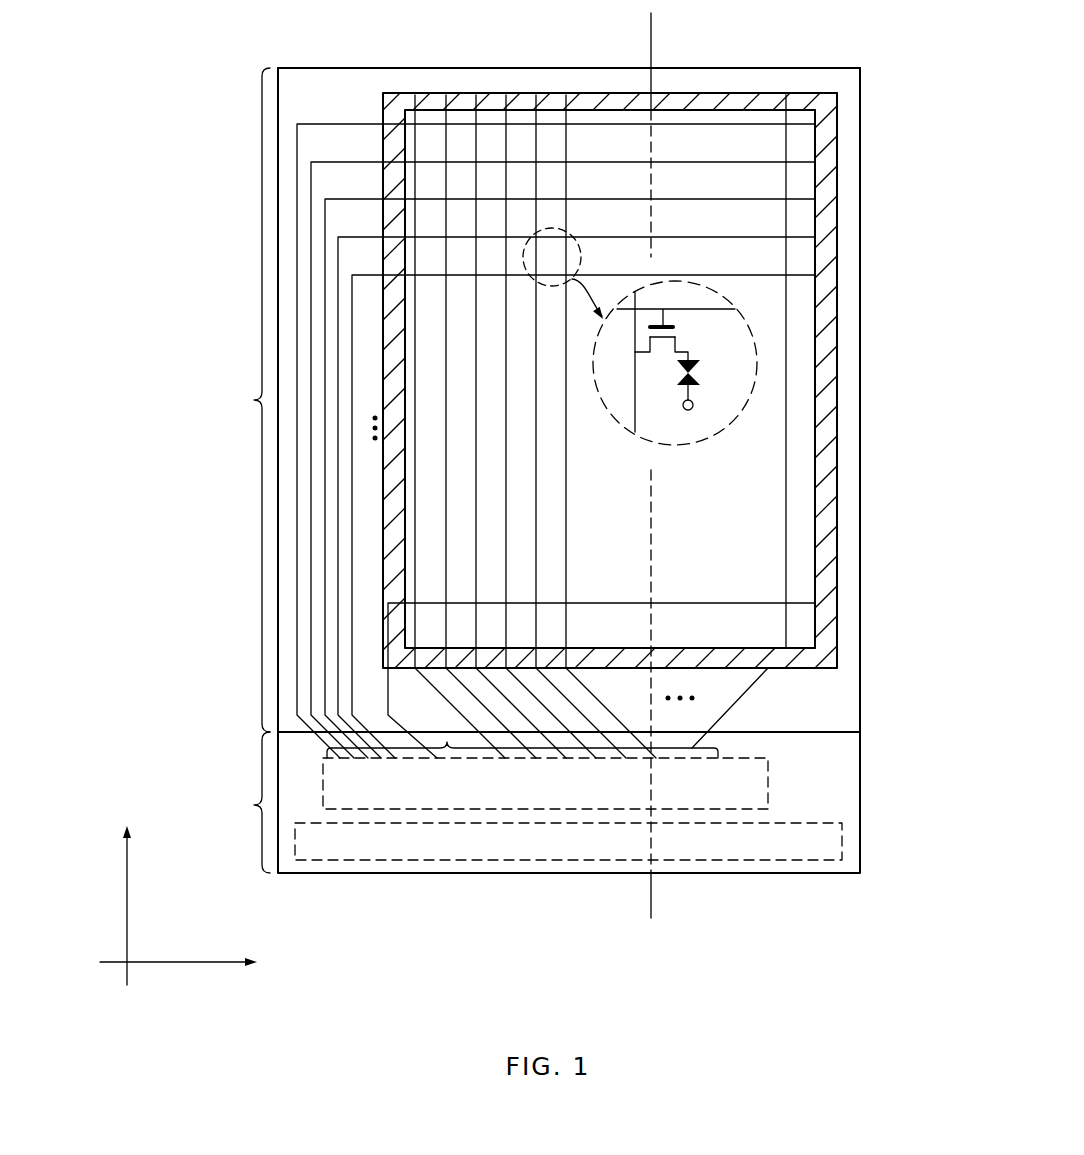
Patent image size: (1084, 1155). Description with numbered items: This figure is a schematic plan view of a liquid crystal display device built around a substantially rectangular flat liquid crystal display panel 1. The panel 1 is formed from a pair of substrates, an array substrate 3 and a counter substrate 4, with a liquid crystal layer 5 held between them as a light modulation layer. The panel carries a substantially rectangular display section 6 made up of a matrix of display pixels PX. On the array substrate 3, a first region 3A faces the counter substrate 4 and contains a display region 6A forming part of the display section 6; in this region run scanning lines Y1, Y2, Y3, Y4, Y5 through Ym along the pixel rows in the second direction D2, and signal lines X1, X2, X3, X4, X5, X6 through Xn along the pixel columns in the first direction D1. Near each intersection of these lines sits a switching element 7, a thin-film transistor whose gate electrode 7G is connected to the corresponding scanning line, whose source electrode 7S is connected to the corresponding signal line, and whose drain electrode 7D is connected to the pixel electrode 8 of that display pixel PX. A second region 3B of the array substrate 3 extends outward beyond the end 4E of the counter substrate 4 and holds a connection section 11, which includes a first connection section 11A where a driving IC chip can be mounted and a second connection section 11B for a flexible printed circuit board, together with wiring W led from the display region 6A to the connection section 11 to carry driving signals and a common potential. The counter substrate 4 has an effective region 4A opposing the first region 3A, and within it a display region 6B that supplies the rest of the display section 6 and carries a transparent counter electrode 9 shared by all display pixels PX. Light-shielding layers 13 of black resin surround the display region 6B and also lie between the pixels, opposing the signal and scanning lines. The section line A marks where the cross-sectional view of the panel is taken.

The liquid crystal display panel 1 is at (816, 898).
The array substrate 3 is at (845, 786).
The first region 3A is at (222, 400).
The second region 3B is at (240, 802).
The counter substrate 4 is at (840, 722).
The effective region 4A is at (222, 400).
The end of the counter substrate 4E is at (773, 731).
The liquid crystal layer 5 is at (710, 365).
The display section 6 is at (800, 463).
The display region 6A is at (808, 558).
The display region 6B is at (808, 628).
The switching element 7 is at (674, 375).
The gate electrode 7G is at (667, 317).
The source electrode 7S is at (637, 352).
The drain electrode 7D is at (674, 350).
The pixel electrode 8 is at (680, 362).
The counter electrode 9 is at (684, 392).
The connection section 11 is at (563, 801).
The first connection section 11A is at (770, 767).
The second connection section 11B is at (795, 824).
The light-shielding layer 13 is at (838, 223).
The display pixel PX is at (766, 356).
The wiring W is at (447, 742).
The signal line X1 is at (414, 97).
The signal line X2 is at (445, 97).
The signal line X3 is at (476, 97).
The signal line X4 is at (507, 97).
The signal line X5 is at (537, 97).
The signal line X6 is at (567, 97).
The signal line Xn is at (790, 95).
The scanning line Y1 is at (686, 125).
The scanning line Y2 is at (686, 163).
The scanning line Y3 is at (686, 200).
The scanning line Y4 is at (663, 238).
The scanning line Y5 is at (727, 275).
The scanning line Ym is at (697, 603).
The section line A is at (660, 902).
The first direction D1 is at (145, 904).
The second direction D2 is at (185, 978).